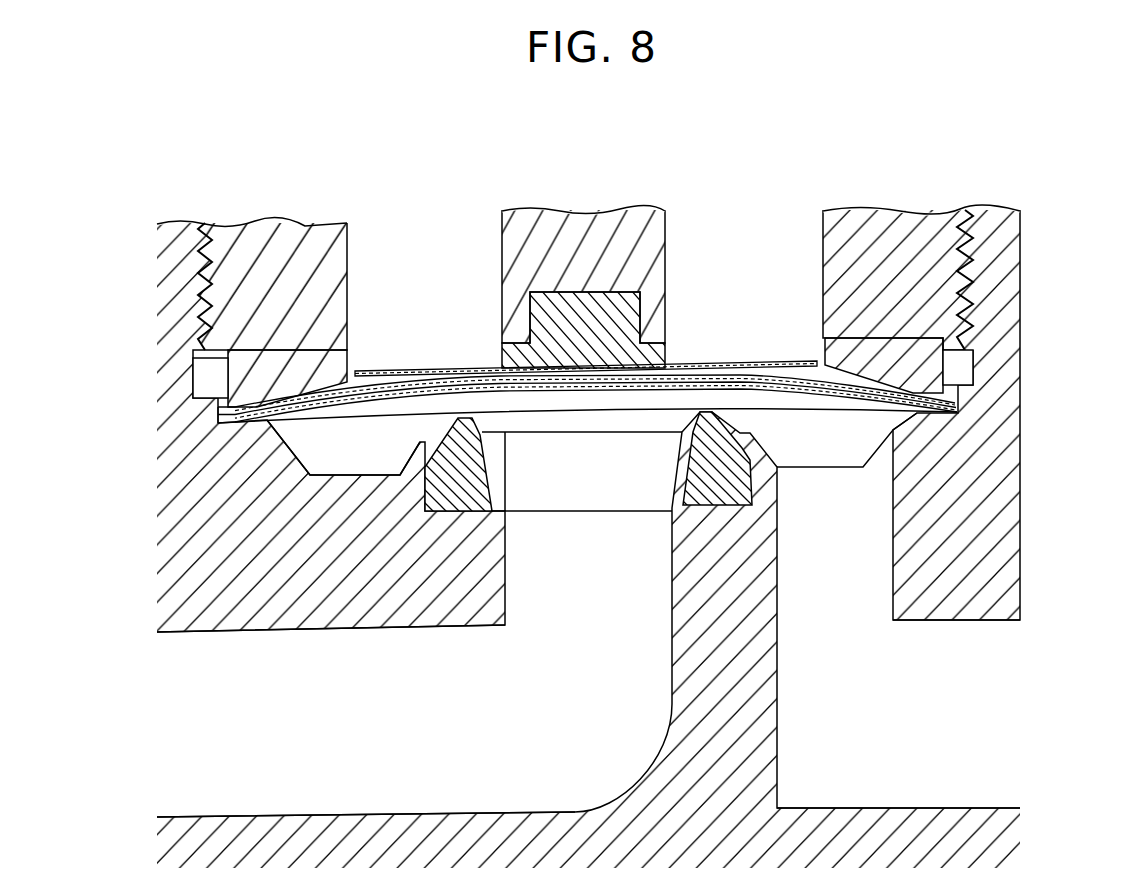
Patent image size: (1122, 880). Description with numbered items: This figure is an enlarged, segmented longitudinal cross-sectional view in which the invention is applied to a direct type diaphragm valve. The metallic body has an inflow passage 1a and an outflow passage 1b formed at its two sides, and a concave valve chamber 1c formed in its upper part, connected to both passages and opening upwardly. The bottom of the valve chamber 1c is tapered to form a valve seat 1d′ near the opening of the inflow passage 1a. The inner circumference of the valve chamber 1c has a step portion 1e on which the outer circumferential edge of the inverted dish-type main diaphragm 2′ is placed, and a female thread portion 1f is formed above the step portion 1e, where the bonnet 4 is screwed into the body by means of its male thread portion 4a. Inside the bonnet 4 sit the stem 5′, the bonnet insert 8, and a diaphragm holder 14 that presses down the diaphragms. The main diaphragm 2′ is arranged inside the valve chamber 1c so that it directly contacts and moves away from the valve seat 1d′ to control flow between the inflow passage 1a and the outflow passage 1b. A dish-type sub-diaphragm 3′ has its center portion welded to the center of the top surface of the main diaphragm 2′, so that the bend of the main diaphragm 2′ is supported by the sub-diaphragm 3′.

The bonnet 4 is at (302, 220).
The male thread portion 4a is at (212, 258).
The stem 5′ is at (577, 208).
The diaphragm holder 14 is at (606, 331).
The bonnet insert 8 is at (855, 360).
The female thread portion 1f is at (970, 290).
The sub-diaphragm 3′ is at (418, 370).
The main diaphragm 2′ is at (414, 401).
The valve seat 1d′ is at (470, 426).
The valve chamber 1c is at (347, 443).
The step portion 1e is at (905, 415).
The inflow passage 1a is at (242, 725).
The outflow passage 1b is at (950, 705).